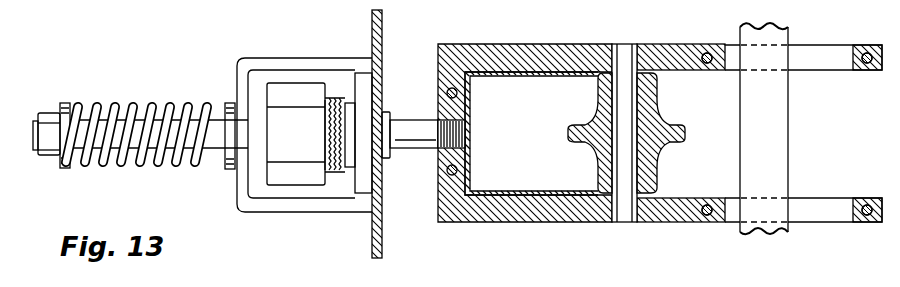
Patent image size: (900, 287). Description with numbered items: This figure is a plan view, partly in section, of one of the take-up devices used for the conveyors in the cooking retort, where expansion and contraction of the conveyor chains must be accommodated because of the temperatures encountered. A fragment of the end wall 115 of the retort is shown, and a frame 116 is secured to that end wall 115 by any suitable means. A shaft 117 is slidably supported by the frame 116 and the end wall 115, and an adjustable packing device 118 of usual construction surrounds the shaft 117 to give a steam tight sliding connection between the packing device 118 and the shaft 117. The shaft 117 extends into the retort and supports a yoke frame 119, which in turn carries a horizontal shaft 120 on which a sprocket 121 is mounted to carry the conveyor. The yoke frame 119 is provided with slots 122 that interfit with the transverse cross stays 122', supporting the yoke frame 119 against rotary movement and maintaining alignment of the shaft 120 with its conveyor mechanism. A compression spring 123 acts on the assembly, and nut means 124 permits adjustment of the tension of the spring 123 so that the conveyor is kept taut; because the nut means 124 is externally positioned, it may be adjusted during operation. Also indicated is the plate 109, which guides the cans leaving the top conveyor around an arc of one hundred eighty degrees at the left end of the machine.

The plate 109 is at (497, 80).
The end wall 115 is at (379, 34).
The frame 116 is at (355, 172).
The shaft 117 is at (405, 128).
The adjustable packing device 118 is at (305, 80).
The yoke frame 119 is at (555, 50).
The horizontal shaft 120 is at (627, 50).
The sprocket 121 is at (677, 128).
The slots 122 is at (803, 133).
The transverse cross stays 122' is at (785, 126).
The compression spring 123 is at (132, 106).
The nut means 124 is at (48, 113).